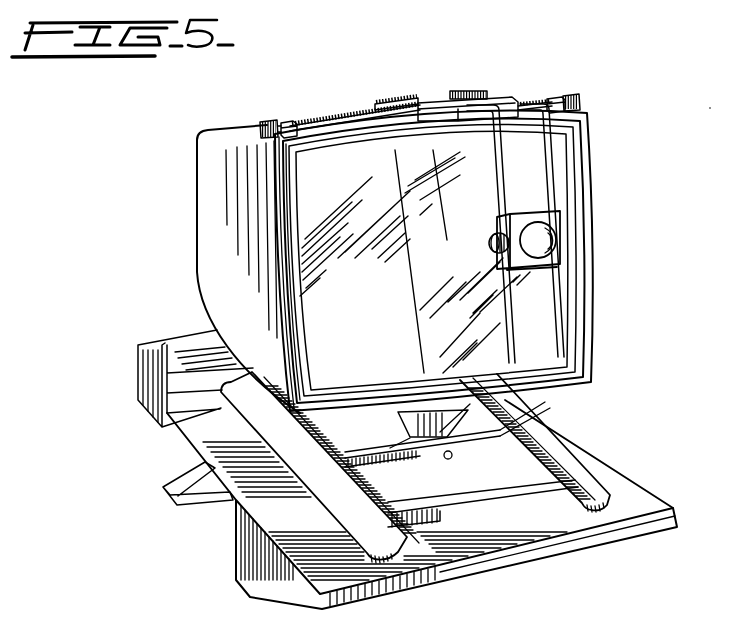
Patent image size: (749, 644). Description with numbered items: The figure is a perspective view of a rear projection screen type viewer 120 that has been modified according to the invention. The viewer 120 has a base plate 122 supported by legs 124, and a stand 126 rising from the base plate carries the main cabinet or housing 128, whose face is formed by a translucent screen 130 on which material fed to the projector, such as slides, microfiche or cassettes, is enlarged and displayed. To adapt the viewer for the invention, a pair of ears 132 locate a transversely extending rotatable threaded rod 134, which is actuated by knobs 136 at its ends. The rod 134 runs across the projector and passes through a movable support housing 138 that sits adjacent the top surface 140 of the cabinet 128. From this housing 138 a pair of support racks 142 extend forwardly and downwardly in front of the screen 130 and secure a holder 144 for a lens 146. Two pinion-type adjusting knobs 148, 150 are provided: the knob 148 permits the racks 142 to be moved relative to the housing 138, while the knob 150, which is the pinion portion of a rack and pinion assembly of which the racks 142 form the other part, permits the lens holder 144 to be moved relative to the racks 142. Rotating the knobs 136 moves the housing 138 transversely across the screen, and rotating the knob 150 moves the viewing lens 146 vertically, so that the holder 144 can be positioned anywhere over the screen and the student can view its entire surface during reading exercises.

The rear projection screen type viewer 120 is at (620, 177).
The base plate 122 is at (600, 460).
The legs 124 is at (208, 505).
The stand 126 is at (440, 427).
The main cabinet or housing 128 is at (207, 183).
The translucent screen 130 is at (322, 275).
The ears 132 is at (291, 120).
The threaded rod 134 is at (347, 123).
The knobs 136 is at (263, 126).
The movable support housing 138 is at (500, 98).
The top surface 140 is at (389, 127).
The support racks 142 is at (503, 192).
The holder 144 is at (562, 253).
The lens 146 is at (540, 236).
The pinion-type adjusting knob 148 is at (467, 90).
The pinion-type adjusting knob 150 is at (489, 244).